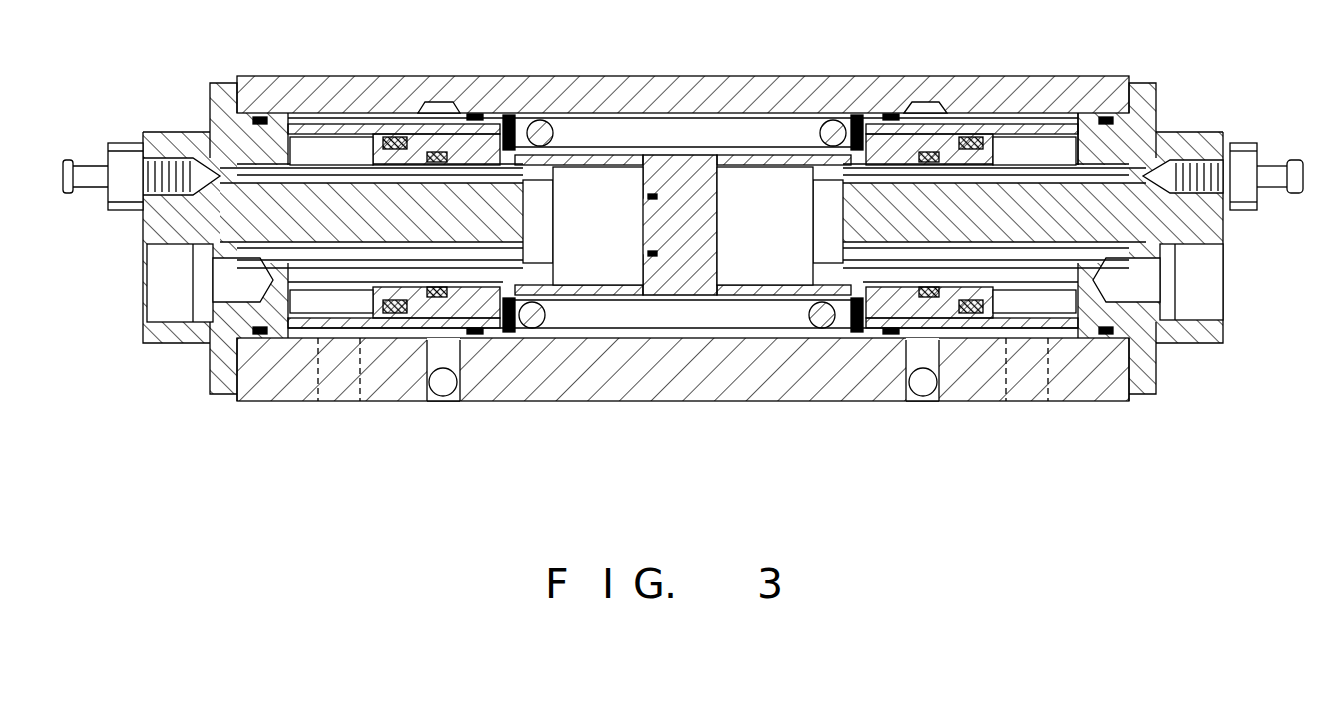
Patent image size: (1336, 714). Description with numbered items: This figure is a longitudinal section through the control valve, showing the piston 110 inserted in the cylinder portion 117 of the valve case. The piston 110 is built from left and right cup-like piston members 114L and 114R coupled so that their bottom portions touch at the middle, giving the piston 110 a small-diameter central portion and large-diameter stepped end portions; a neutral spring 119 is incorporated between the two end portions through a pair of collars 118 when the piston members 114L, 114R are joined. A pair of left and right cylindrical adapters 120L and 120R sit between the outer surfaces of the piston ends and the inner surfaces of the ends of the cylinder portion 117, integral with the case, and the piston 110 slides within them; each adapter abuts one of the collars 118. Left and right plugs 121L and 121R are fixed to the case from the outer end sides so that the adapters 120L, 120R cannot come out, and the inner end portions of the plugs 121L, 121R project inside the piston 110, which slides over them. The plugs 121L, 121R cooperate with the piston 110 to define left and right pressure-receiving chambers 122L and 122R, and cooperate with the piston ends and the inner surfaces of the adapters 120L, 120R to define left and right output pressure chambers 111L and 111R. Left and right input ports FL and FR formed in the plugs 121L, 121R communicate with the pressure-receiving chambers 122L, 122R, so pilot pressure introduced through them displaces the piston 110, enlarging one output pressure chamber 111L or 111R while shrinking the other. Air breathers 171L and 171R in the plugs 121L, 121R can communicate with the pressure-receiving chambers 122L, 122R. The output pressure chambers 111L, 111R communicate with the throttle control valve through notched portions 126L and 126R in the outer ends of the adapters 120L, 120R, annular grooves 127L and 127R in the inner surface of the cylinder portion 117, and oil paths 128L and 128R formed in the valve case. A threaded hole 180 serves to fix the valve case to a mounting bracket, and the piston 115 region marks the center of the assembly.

The piston 110 is at (723, 255).
The left output pressure chamber 111L is at (307, 305).
The right output pressure chamber 111R is at (1060, 304).
The left piston member 114L is at (658, 154).
The right piston member 114R is at (707, 154).
The piston 115 is at (633, 258).
The cylinder portion 117 is at (1087, 105).
The collars 118 is at (513, 114).
The neutral spring 119 is at (593, 114).
The left cylindrical adapter 120L is at (337, 130).
The right cylindrical adapter 120R is at (1010, 128).
The left plug 121L is at (205, 328).
The right plug 121R is at (1170, 345).
The left pressure-receiving chamber 122L is at (620, 201).
The right pressure-receiving chamber 122R is at (787, 201).
The left notched portion 126L is at (293, 117).
The right notched portion 126R is at (1108, 117).
The left annular groove 127L is at (440, 101).
The right annular groove 127R is at (917, 101).
The left oil path 128L is at (457, 357).
The right oil path 128R is at (925, 357).
The left air breather 171L is at (93, 166).
The right air breather 171R is at (1282, 166).
The threaded hole 180 is at (370, 393).
The left input port FL is at (166, 284).
The right input port FR is at (1228, 314).